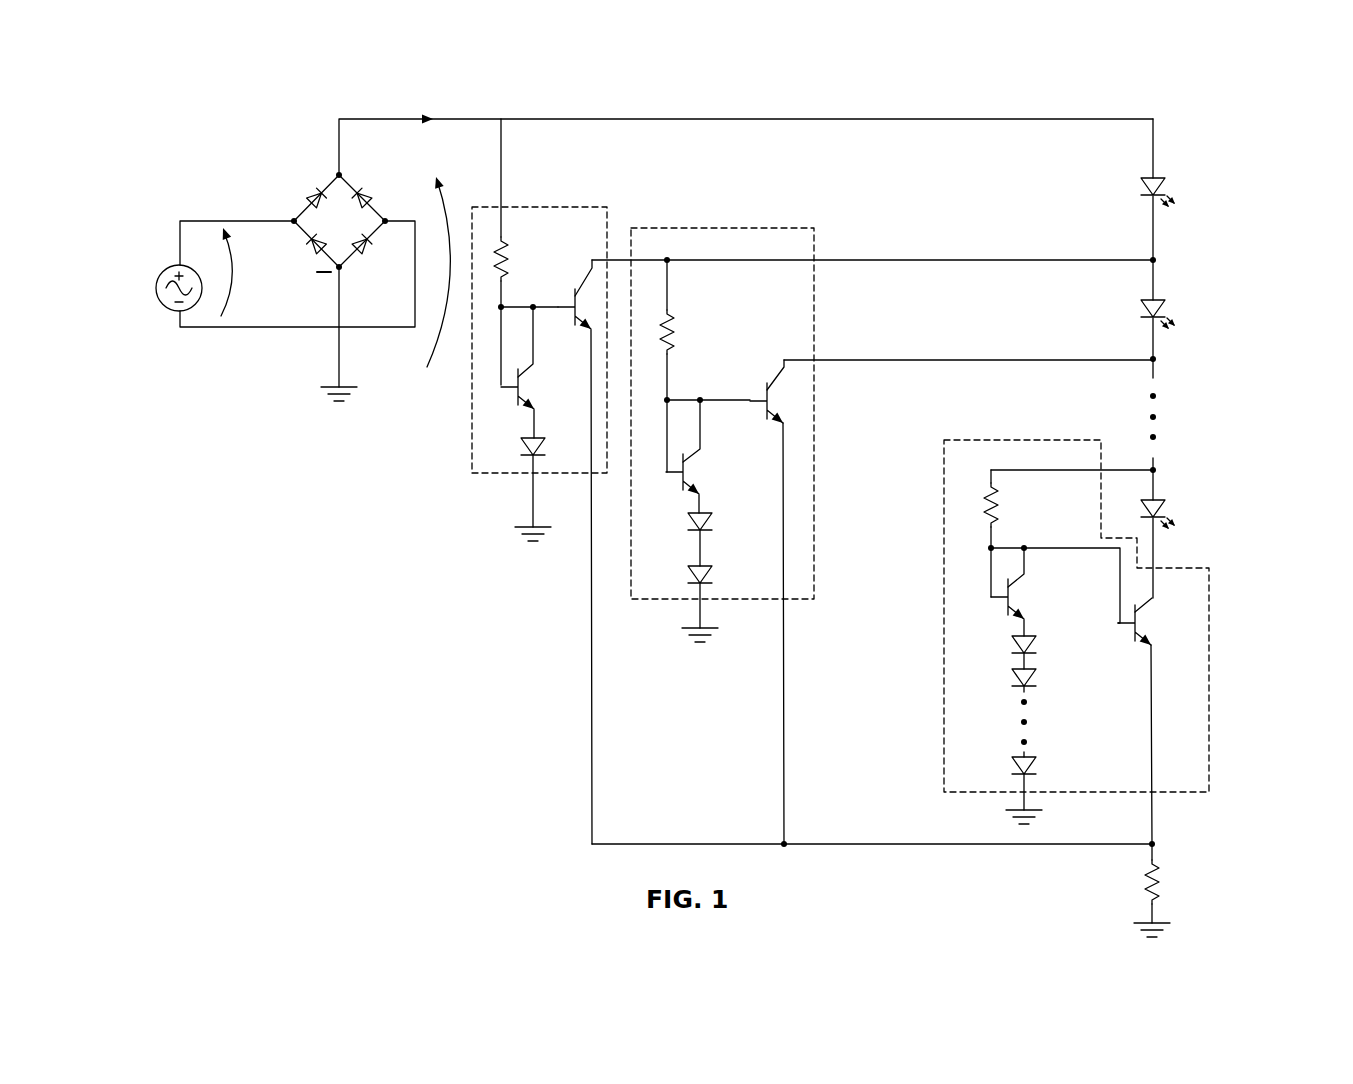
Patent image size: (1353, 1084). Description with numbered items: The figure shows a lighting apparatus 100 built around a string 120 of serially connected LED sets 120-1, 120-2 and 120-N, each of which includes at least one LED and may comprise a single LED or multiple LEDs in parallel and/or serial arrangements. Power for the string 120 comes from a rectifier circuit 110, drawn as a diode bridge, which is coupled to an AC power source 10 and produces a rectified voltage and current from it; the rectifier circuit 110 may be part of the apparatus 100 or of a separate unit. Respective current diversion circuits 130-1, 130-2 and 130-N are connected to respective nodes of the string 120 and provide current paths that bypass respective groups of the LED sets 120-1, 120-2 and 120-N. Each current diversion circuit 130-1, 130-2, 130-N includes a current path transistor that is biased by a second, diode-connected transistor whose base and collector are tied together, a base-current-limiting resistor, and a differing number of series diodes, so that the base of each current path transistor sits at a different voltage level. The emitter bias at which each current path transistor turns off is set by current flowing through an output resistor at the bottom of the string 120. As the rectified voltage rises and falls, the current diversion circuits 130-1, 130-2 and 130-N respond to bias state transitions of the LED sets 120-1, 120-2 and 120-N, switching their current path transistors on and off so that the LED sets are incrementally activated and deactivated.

The lighting apparatus 100 is at (230, 102).
The AC power source 10 is at (158, 289).
The rectifier circuit 110 is at (296, 184).
The string 120 is at (1168, 120).
The LED set 120-1 is at (1181, 185).
The LED set 120-2 is at (1181, 306).
The LED set 120-N is at (1181, 505).
The current diversion circuit 130-1 is at (540, 207).
The current diversion circuit 130-2 is at (728, 228).
The current diversion circuit 130-N is at (1022, 440).